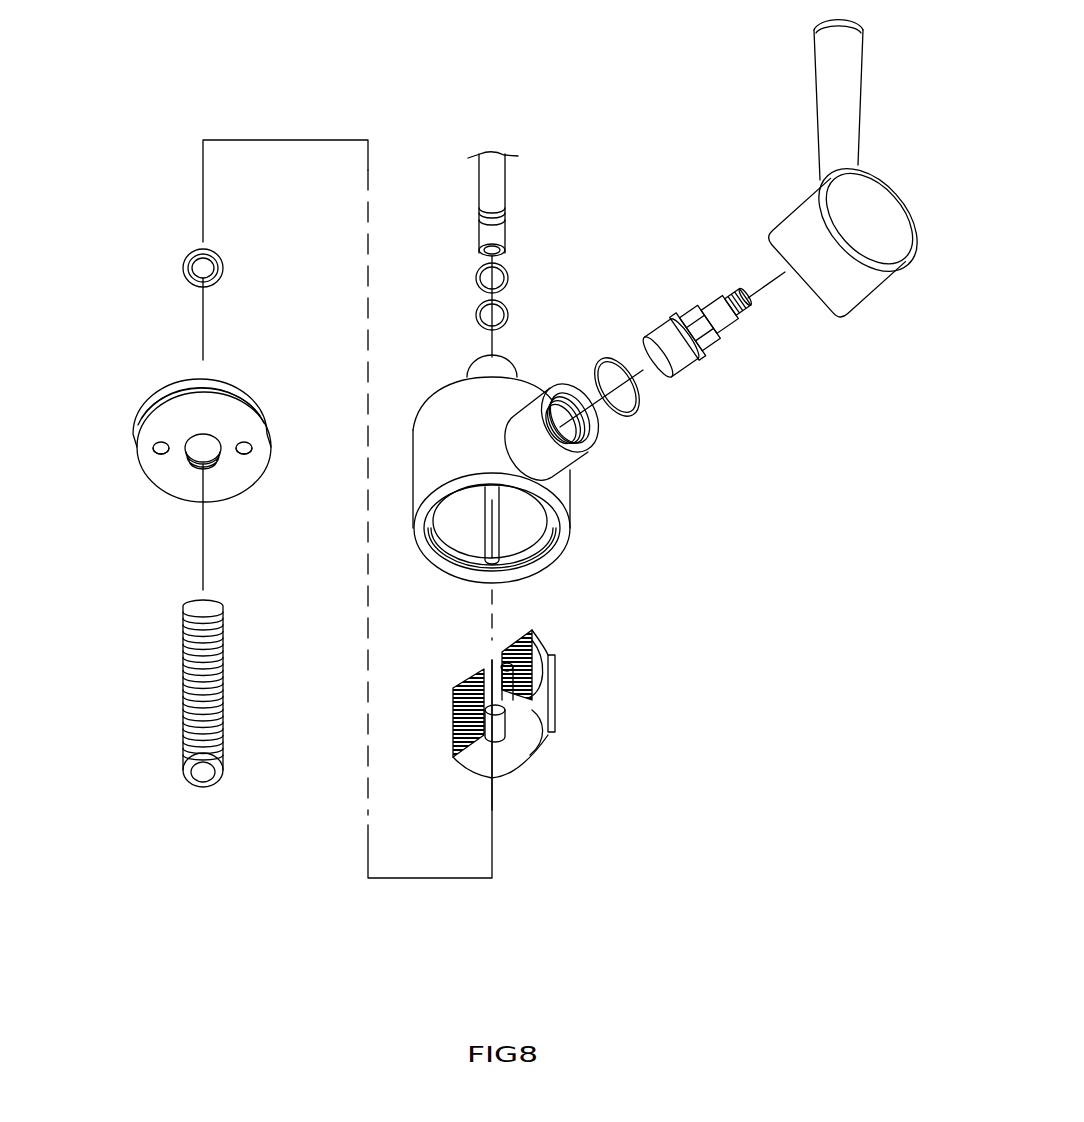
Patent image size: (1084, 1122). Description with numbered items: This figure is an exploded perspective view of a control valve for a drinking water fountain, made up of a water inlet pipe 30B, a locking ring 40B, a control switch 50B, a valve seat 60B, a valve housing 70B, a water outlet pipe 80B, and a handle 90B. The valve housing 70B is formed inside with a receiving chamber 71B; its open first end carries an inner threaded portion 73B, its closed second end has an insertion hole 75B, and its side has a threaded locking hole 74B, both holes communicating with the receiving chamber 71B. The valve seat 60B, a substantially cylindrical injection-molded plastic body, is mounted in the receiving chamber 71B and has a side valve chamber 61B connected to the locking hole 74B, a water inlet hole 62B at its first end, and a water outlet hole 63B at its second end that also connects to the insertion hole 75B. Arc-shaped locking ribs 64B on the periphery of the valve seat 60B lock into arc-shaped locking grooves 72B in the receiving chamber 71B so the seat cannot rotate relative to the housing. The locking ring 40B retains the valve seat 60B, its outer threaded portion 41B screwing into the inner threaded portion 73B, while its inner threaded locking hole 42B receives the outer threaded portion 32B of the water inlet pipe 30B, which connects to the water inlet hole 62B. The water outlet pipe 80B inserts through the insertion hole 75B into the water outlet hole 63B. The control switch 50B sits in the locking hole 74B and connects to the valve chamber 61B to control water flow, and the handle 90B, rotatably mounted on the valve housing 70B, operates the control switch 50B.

The water inlet pipe 30B is at (175, 680).
The outer threaded portion 32B is at (213, 730).
The locking ring 40B is at (157, 492).
The outer threaded portion 41B is at (248, 392).
The threaded locking hole 42B is at (217, 465).
The control switch 50B is at (713, 380).
The valve seat 60B is at (565, 732).
The valve chamber 61B is at (537, 677).
The water inlet hole 62B is at (500, 733).
The water outlet hole 63B is at (483, 668).
The locking ribs 64B is at (553, 700).
The valve housing 70B is at (576, 548).
The receiving chamber 71B is at (523, 520).
The locking grooves 72B is at (488, 498).
The inner threaded portion 73B is at (525, 565).
The threaded locking hole 74B is at (578, 393).
The insertion hole 75B is at (480, 355).
The water outlet pipe 80B is at (506, 195).
The handle 90B is at (858, 320).